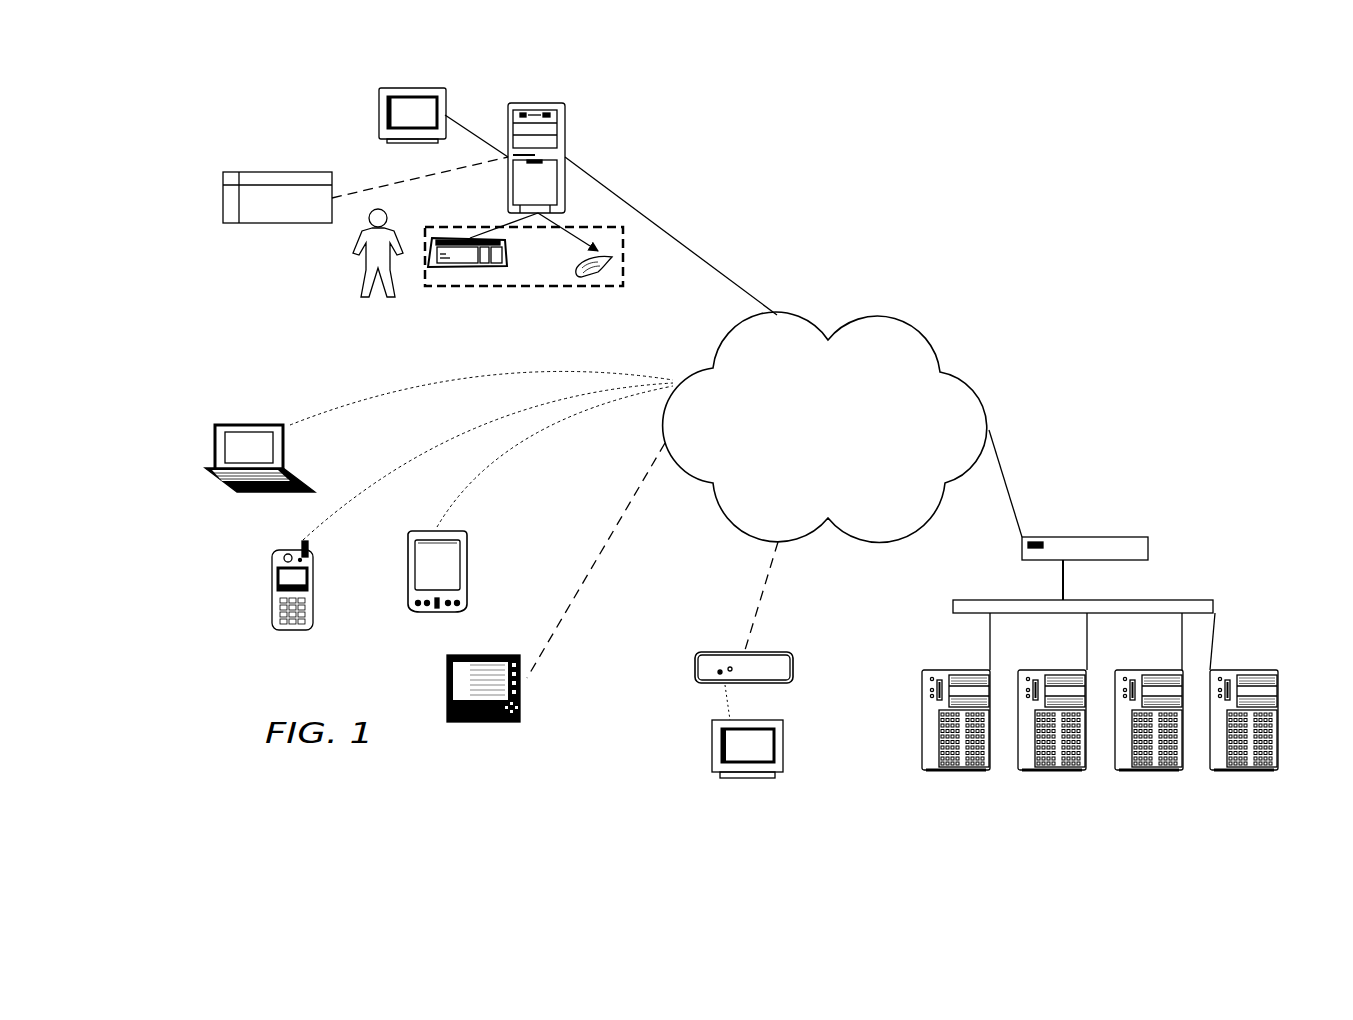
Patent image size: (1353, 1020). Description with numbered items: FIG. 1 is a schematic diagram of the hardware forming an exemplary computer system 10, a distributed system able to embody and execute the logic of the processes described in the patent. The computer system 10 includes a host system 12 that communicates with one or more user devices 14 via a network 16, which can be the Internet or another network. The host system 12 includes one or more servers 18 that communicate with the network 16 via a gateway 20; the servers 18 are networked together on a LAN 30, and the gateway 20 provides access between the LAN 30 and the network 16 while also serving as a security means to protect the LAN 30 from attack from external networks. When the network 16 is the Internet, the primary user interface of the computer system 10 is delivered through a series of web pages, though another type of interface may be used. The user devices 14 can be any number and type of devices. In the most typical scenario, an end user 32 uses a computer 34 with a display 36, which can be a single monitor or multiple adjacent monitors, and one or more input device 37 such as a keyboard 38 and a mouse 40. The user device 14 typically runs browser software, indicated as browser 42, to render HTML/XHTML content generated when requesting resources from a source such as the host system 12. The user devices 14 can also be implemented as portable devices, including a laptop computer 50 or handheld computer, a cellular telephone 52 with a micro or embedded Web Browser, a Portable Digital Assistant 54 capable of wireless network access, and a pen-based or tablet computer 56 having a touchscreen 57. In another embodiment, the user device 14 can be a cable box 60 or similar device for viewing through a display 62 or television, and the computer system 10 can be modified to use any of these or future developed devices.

The computer system 10 is at (944, 159).
The host system 12 is at (1131, 474).
The user devices 14 is at (262, 666).
The network 16 is at (877, 317).
The servers 18 is at (1275, 672).
The gateway 20 is at (1148, 537).
The LAN 30 is at (1215, 613).
The end user 32 is at (357, 253).
The computer 34 is at (567, 103).
The display 36 is at (380, 88).
The input device 37 is at (443, 287).
The keyboard 38 is at (467, 267).
The mouse 40 is at (592, 270).
The browser 42 is at (223, 223).
The laptop computer 50 is at (262, 427).
The cellular telephone 52 is at (273, 590).
The Portable Digital Assistant 54 is at (408, 572).
The tablet computer 56 is at (456, 668).
The touchscreen 57 is at (477, 655).
The cable box 60 is at (793, 670).
The display 62 is at (783, 748).